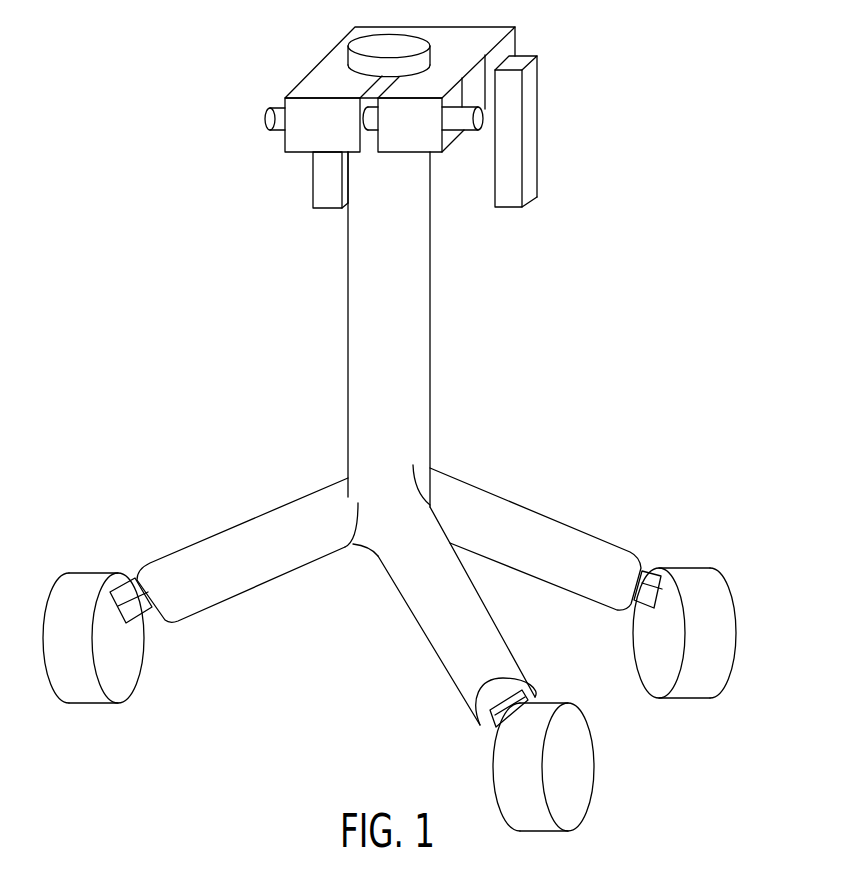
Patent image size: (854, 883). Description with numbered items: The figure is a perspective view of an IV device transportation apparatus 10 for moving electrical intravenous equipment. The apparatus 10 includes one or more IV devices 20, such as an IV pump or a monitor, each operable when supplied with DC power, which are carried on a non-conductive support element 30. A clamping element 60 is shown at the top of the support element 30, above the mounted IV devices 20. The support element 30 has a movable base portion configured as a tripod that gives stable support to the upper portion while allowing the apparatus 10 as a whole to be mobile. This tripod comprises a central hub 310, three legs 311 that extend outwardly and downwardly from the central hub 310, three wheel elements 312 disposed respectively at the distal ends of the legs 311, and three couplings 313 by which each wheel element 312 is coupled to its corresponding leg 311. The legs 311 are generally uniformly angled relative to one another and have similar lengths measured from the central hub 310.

The IV device transportation apparatus 10 is at (117, 96).
The IV device 20 is at (322, 182).
The non-conductive support element 30 is at (345, 343).
The clamping element 60 is at (340, 43).
The central hub 310 is at (315, 557).
The legs 311 is at (240, 522).
The wheel elements 312 is at (122, 687).
The couplings 313 is at (135, 605).